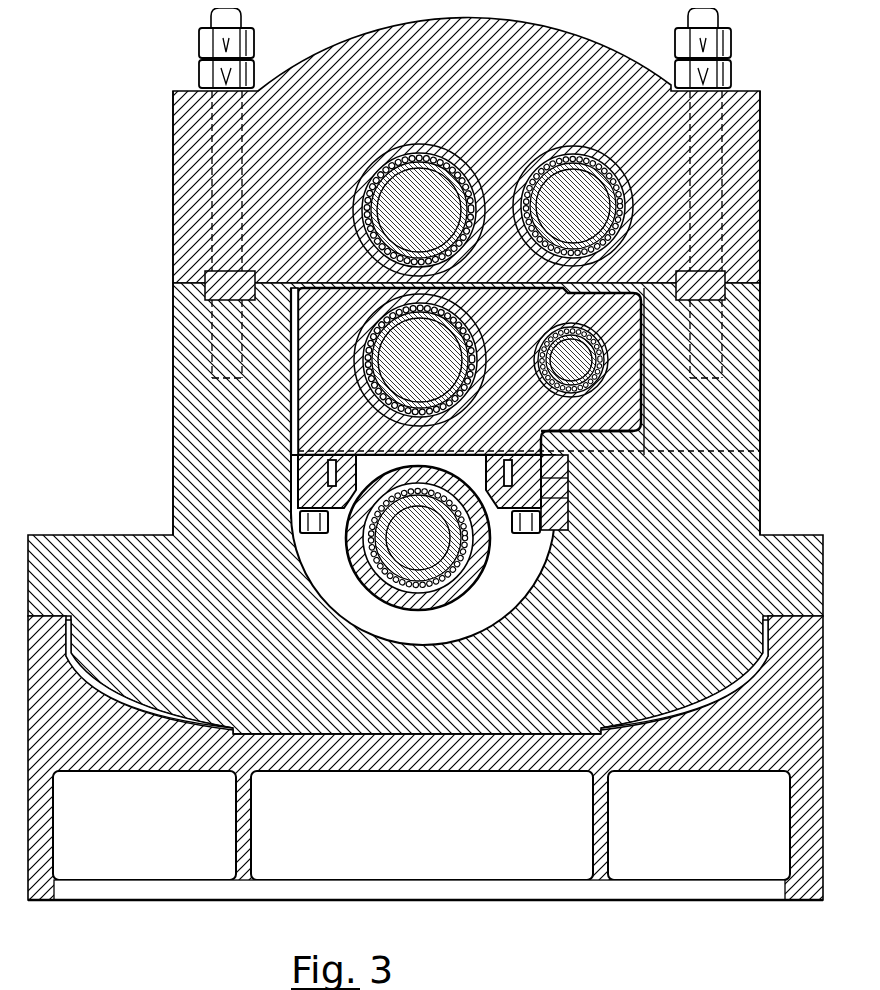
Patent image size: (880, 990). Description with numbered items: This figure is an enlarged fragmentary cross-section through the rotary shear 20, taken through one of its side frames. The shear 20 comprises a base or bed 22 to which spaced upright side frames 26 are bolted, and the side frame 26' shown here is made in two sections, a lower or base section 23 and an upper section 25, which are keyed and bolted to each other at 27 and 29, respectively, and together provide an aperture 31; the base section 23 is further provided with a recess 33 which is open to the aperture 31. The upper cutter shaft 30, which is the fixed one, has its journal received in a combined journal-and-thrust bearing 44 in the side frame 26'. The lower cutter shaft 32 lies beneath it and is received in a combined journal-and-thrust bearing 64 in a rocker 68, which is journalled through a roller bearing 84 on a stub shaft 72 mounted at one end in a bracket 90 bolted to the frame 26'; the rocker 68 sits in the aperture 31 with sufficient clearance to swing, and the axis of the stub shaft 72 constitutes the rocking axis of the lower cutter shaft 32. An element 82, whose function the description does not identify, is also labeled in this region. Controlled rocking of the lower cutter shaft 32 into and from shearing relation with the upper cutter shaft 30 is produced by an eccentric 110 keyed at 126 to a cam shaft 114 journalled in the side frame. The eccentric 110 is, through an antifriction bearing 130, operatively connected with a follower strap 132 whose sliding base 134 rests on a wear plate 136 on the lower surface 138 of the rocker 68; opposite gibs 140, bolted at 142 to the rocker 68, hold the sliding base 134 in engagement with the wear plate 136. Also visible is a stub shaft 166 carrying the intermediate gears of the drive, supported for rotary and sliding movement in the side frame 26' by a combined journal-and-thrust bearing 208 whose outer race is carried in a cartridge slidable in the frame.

The rotary shear 20 is at (132, 347).
The base or bed 22 is at (44, 882).
The lower or base section 23 is at (725, 483).
The upper section 25 is at (754, 164).
The side frame 26 is at (143, 409).
The side frame 26' is at (787, 313).
The key 27 is at (197, 282).
The bolts 29 is at (196, 60).
The upper cutter shaft 30 is at (375, 203).
The aperture 31 is at (632, 426).
The lower cutter shaft 32 is at (385, 380).
The recess 33 is at (437, 625).
The combined journal-and-thrust bearing 44 is at (378, 148).
The combined journal-and-thrust bearing 64 is at (352, 475).
The rocker 68 is at (554, 485).
The stub shaft 72 is at (570, 343).
The cage wall 82 is at (505, 412).
The roller bearing 84 is at (554, 492).
The bracket 90 is at (752, 447).
The eccentric 110 is at (365, 533).
The cam shaft 114 is at (443, 548).
The key 126 is at (486, 477).
The antifriction bearing 130 is at (380, 575).
The follower strap 132 is at (432, 592).
The sliding base 134 is at (505, 500).
The wear plate 136 is at (312, 462).
The lower surface 138 is at (555, 503).
The gibs 140 is at (297, 480).
The bolts 142 is at (350, 541).
The stub shaft 166 is at (563, 178).
The combined journal-and-thrust bearing 208 is at (622, 207).